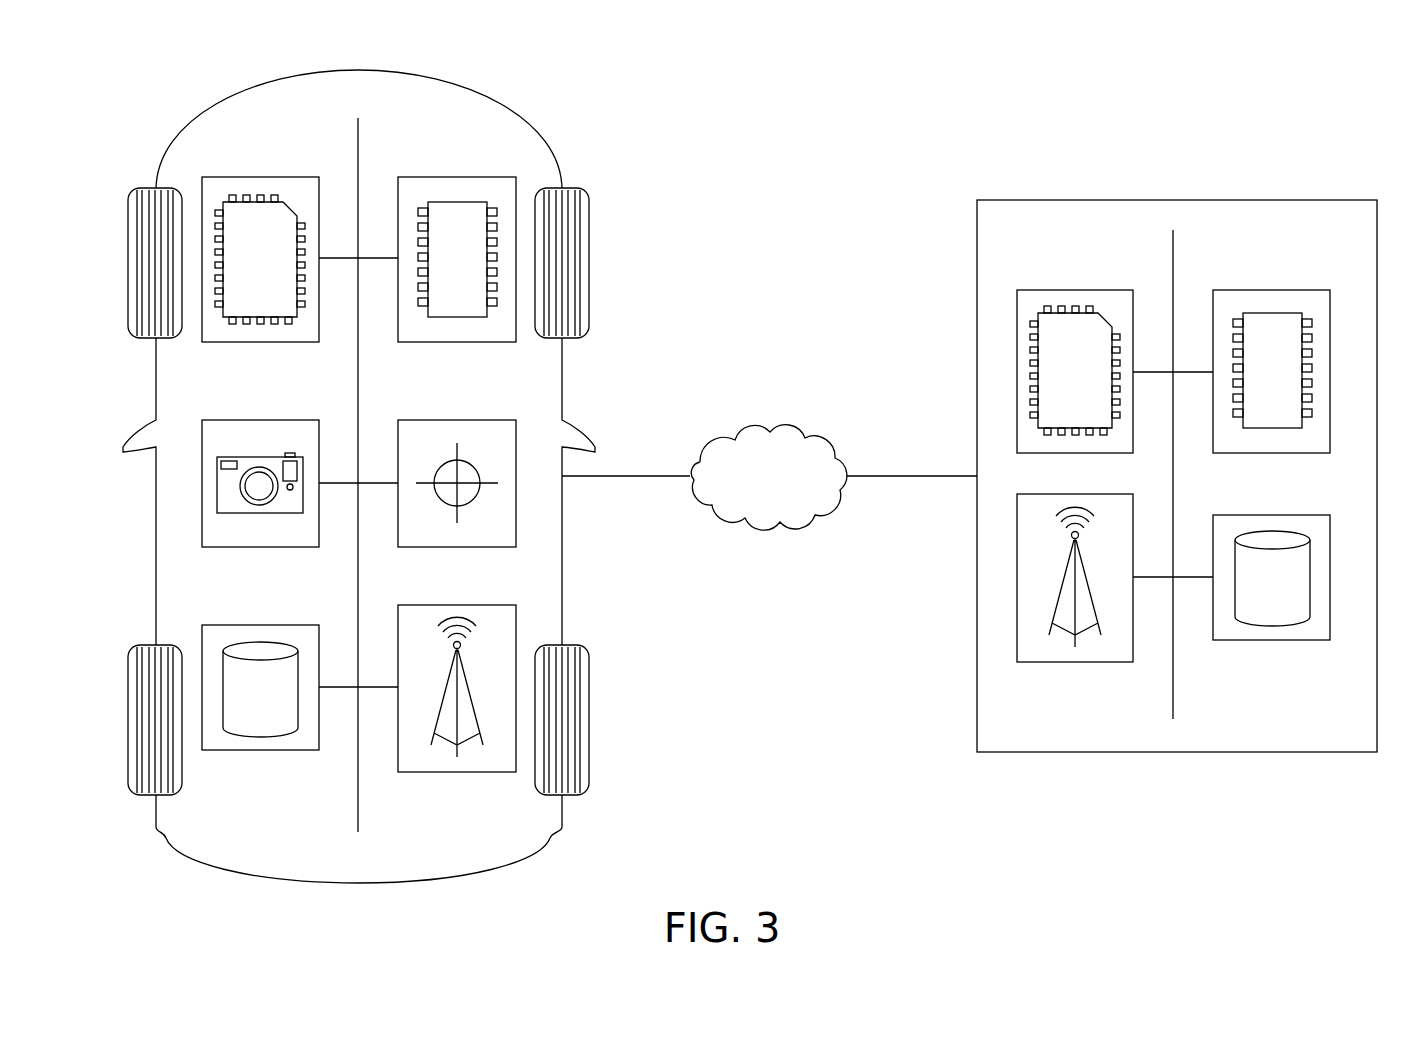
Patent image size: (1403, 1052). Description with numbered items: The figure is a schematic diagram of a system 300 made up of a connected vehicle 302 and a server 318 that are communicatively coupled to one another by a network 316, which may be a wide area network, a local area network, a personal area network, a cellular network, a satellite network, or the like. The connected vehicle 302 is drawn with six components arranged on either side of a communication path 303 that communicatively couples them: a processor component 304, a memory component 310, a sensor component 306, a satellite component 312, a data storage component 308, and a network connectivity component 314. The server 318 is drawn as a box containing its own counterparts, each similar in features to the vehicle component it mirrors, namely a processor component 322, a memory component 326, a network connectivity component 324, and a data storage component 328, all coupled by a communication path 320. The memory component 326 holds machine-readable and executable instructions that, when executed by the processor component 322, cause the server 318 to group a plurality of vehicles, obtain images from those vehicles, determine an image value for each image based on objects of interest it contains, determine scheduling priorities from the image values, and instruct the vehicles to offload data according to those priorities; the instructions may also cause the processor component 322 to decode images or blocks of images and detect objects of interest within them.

The system 300 is at (1120, 110).
The connected vehicle 302 is at (213, 98).
The communication path 303 is at (358, 152).
The processor component 304 is at (258, 177).
The sensor component 306 is at (258, 420).
The data storage component 308 is at (258, 625).
The memory component 310 is at (458, 177).
The satellite component 312 is at (458, 420).
The network connectivity component 314 is at (458, 605).
The network 316 is at (752, 432).
The server 318 is at (1177, 449).
The communication path 320 is at (1173, 264).
The processor component 322 is at (1075, 290).
The network connectivity component 324 is at (1077, 662).
The memory component 326 is at (1272, 290).
The data storage component 328 is at (1272, 640).